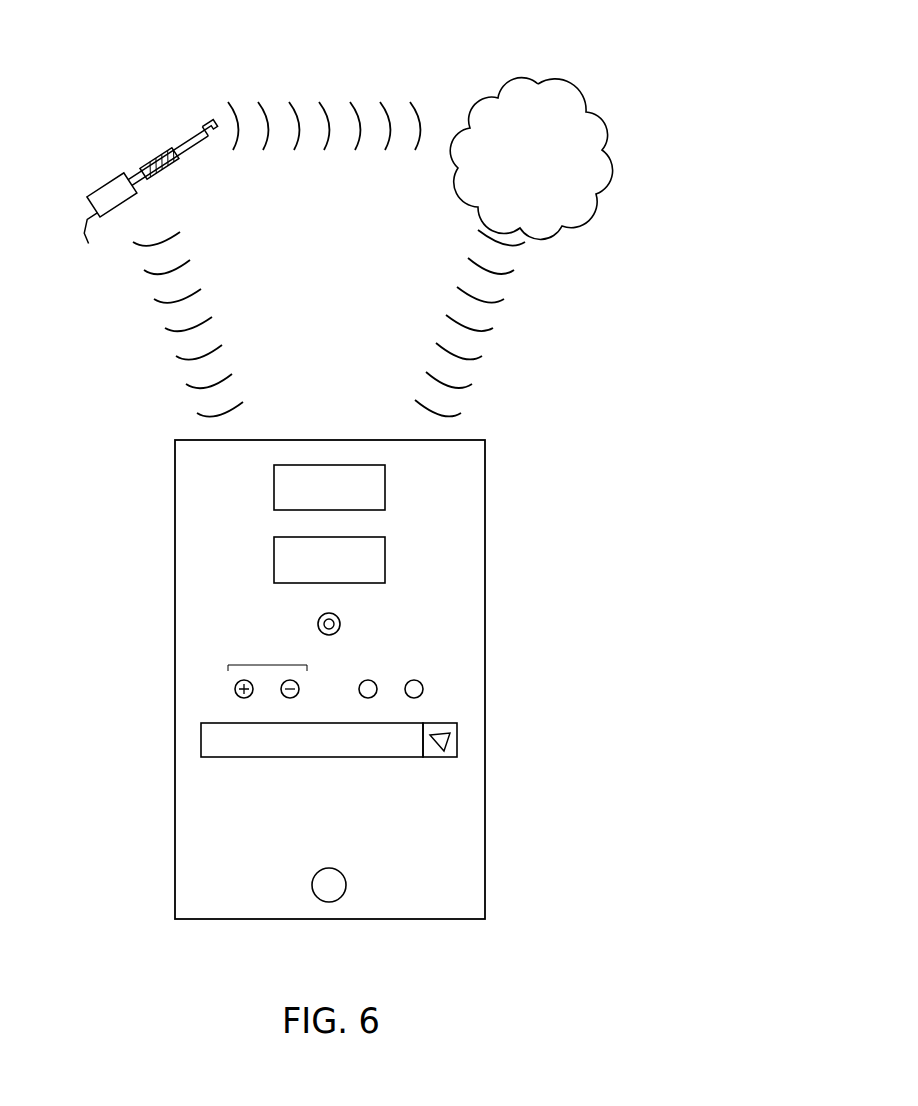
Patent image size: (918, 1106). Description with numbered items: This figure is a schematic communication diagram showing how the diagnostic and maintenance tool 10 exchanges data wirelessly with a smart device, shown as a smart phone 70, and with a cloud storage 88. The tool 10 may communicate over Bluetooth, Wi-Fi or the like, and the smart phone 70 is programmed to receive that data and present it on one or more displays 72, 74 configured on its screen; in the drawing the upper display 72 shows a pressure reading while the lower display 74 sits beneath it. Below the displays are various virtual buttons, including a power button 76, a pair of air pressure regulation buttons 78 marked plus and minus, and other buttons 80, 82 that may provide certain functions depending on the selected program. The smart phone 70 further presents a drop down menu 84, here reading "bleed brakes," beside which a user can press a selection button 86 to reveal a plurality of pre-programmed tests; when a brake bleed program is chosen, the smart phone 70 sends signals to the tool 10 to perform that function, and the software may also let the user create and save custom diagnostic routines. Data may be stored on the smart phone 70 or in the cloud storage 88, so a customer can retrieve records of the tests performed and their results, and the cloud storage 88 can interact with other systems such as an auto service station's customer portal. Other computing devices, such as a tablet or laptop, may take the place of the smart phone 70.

The tool 10 is at (133, 126).
The smart phone 70 is at (604, 416).
The display 72 is at (385, 487).
The display 74 is at (385, 560).
The power button 76 is at (340, 623).
The air pressure regulation buttons 78 is at (272, 663).
The button 80 is at (370, 680).
The button 82 is at (424, 689).
The drop down menu 84 is at (201, 740).
The selection button 86 is at (457, 737).
The cloud storage 88 is at (558, 110).